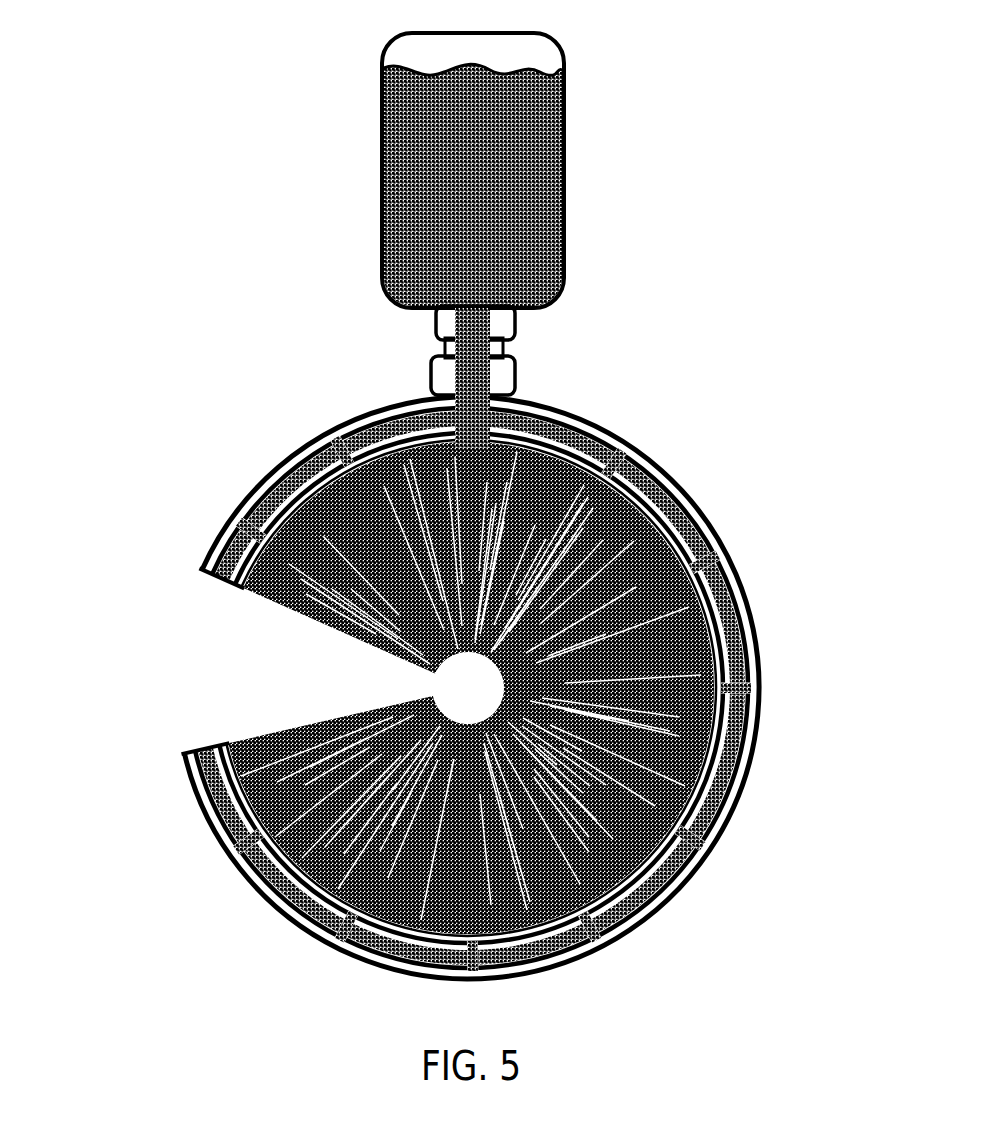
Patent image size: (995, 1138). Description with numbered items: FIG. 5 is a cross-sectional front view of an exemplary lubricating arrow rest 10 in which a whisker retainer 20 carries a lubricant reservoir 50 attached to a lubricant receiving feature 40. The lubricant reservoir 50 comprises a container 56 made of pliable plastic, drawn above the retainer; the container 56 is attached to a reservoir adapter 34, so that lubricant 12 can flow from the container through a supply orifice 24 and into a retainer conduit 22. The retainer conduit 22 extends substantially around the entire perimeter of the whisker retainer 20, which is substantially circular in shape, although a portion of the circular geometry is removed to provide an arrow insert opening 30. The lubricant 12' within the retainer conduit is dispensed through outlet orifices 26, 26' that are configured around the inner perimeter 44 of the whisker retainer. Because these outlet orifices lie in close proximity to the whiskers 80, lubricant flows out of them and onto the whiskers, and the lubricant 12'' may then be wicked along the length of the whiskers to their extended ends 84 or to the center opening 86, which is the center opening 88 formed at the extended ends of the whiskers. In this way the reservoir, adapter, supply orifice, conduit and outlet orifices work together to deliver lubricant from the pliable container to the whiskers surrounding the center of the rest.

The lubricating arrow rest 10 is at (258, 289).
The lubricant 12 is at (536, 170).
The lubricant reservoir 50 is at (385, 92).
The container 56 is at (520, 218).
The supply orifice 24 is at (462, 390).
The reservoir adapter 34 is at (495, 358).
The lubricant receiving feature 40 is at (487, 363).
The whisker retainer 20 is at (675, 470).
The retainer conduit 22 is at (600, 430).
The outlet orifice 26 is at (471, 668).
The outlet orifice 26' is at (191, 513).
The arrow insert opening 30 is at (198, 663).
The center opening 86 is at (355, 665).
The extended ends 84 is at (437, 700).
The center opening 88 is at (484, 661).
The whiskers 80 is at (730, 615).
The lubricant 12' is at (543, 688).
The lubricant 12'' is at (589, 825).
The inner perimeter 44 is at (750, 735).